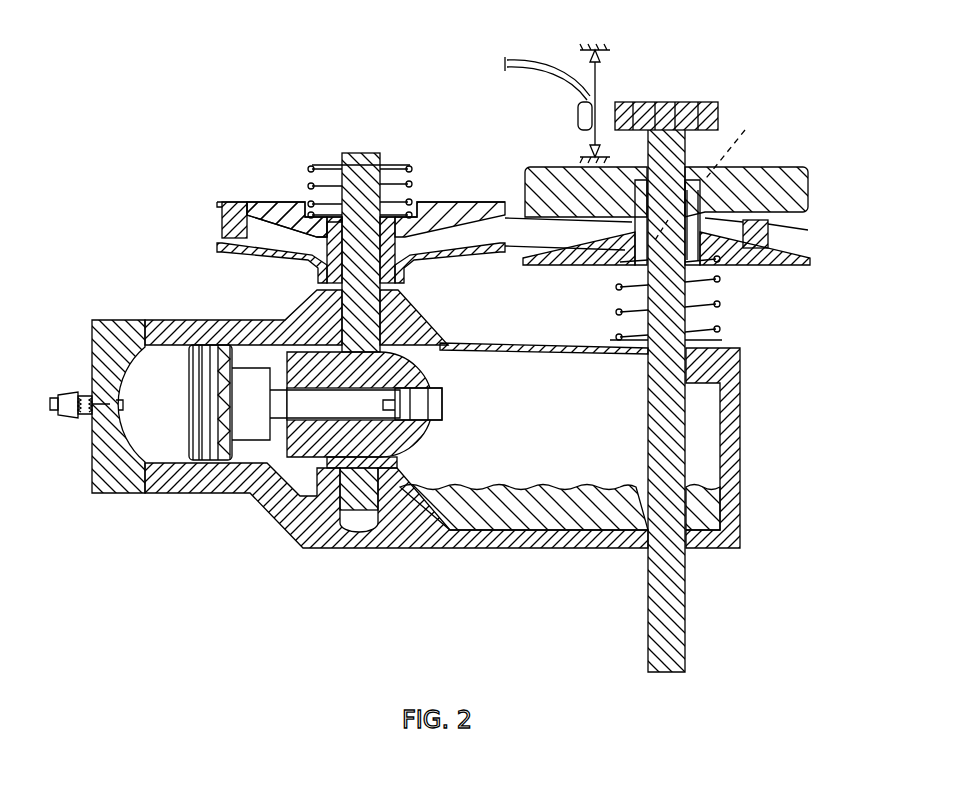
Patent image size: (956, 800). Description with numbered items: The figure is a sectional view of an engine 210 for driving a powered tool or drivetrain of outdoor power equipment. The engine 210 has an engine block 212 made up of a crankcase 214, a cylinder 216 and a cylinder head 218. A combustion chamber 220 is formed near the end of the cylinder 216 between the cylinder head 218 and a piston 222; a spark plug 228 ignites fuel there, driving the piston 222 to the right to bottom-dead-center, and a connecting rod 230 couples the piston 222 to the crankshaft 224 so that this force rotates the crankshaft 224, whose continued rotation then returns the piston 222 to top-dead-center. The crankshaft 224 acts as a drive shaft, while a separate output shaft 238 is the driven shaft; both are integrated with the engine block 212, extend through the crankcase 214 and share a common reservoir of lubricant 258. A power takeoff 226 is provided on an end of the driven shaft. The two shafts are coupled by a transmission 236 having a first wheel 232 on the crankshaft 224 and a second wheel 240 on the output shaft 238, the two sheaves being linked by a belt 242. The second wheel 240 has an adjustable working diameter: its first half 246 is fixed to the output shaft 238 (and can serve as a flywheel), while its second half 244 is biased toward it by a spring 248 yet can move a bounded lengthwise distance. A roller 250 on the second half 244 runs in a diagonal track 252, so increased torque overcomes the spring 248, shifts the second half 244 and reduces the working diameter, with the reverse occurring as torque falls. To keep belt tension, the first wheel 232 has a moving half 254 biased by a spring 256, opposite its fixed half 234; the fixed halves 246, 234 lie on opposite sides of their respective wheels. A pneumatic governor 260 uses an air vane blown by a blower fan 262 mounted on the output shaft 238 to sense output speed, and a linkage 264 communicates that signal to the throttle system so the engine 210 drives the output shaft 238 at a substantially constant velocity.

The engine 210 is at (215, 86).
The engine block 212 is at (303, 540).
The crankcase 214 is at (495, 545).
The cylinder 216 is at (187, 480).
The cylinder head 218 is at (108, 462).
The combustion chamber 220 is at (149, 396).
The piston 222 is at (212, 360).
The crankshaft 224 is at (357, 320).
The power takeoff 226 is at (675, 647).
The spark plug 228 is at (92, 404).
The connecting rod 230 is at (373, 415).
The first wheel 232 is at (286, 212).
The fixed half of first wheel 234 is at (228, 247).
The transmission 236 is at (388, 127).
The output shaft 238 is at (665, 427).
The second wheel 240 is at (772, 182).
The belt 242 is at (762, 228).
The second half of second wheel 244 is at (772, 258).
The first half of second wheel 246 is at (800, 190).
The spring 248 is at (717, 323).
The roller 250 is at (700, 192).
The diagonal track 252 is at (714, 172).
The moving half of first wheel 254 is at (238, 212).
The spring 256 is at (322, 162).
The lubricant 258 is at (573, 520).
The pneumatic governor 260 is at (580, 106).
The blower fan 262 is at (688, 103).
The linkage 264 is at (556, 63).